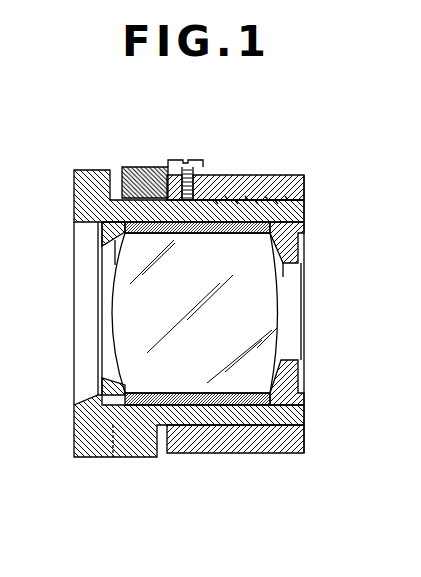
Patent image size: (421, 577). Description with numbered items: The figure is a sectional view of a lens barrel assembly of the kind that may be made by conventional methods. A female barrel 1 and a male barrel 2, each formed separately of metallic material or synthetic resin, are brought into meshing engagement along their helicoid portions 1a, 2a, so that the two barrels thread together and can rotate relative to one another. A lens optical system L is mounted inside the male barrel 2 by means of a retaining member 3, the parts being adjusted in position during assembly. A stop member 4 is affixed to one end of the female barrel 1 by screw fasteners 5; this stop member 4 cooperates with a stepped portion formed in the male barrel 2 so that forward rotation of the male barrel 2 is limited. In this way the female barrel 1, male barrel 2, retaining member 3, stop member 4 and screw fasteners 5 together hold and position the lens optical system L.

The female barrel 1 is at (297, 178).
The helicoid portion of female barrel 1a is at (272, 178).
The male barrel 2 is at (92, 180).
The helicoid portion of male barrel 2a is at (243, 178).
The retaining member 3 is at (302, 250).
The stop member 4 is at (147, 172).
The screw fastener 5 is at (197, 160).
The lens optical system L is at (219, 386).